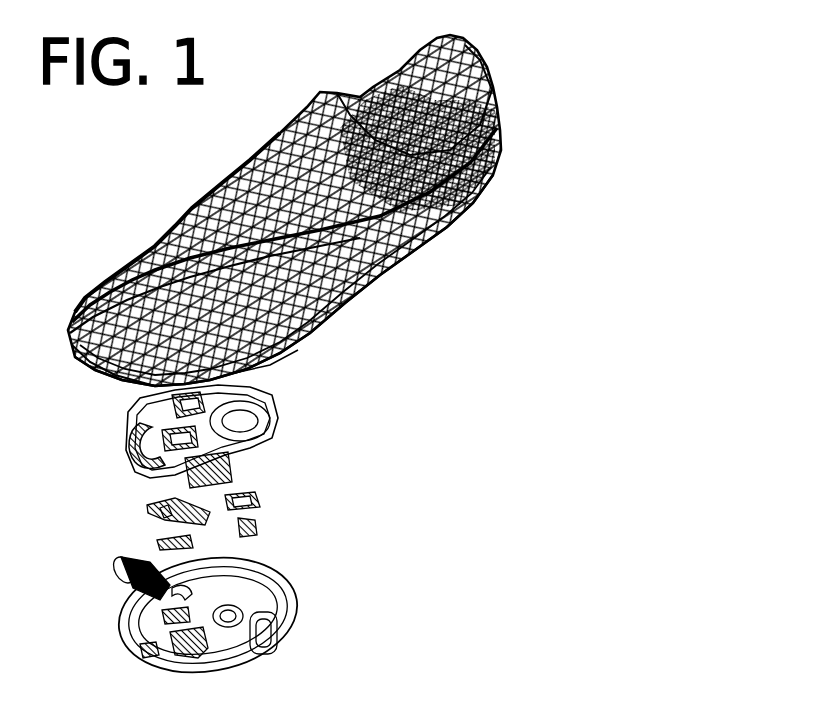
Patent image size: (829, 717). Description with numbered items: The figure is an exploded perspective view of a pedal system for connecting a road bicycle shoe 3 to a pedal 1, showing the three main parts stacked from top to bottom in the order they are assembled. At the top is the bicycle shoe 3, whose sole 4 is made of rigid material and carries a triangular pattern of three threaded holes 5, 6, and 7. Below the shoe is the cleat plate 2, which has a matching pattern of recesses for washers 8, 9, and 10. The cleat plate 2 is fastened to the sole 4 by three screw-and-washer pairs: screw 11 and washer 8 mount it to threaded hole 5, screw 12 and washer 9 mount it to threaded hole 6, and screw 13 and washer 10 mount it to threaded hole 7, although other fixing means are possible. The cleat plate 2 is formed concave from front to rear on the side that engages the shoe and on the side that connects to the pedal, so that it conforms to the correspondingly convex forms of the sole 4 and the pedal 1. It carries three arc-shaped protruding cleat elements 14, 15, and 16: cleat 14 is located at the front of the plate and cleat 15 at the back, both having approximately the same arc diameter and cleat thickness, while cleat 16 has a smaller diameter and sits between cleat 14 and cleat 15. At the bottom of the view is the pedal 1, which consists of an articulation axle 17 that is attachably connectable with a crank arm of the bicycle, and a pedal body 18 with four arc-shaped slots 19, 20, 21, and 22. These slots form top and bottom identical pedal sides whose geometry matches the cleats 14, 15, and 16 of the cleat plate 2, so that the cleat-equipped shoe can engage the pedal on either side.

The pedal 1 is at (295, 583).
The cleat plate 2 is at (283, 405).
The bicycle shoe 3 is at (243, 170).
The sole 4 is at (318, 332).
The threaded hole 5 is at (276, 356).
The threaded hole 6 is at (123, 273).
The threaded hole 7 is at (72, 316).
The washer 8 is at (268, 502).
The washer 9 is at (230, 468).
The washer 10 is at (147, 512).
The screw 11 is at (265, 537).
The screw 12 is at (152, 503).
The screw 13 is at (163, 541).
The cleat element 14 is at (127, 445).
The cleat element 15 is at (277, 427).
The cleat element 16 is at (262, 443).
The articulation axle 17 is at (112, 578).
The pedal body 18 is at (167, 615).
The arc-shaped slot 19 is at (145, 655).
The arc-shaped slot 20 is at (180, 667).
The arc-shaped slot 21 is at (250, 645).
The arc-shaped slot 22 is at (245, 620).